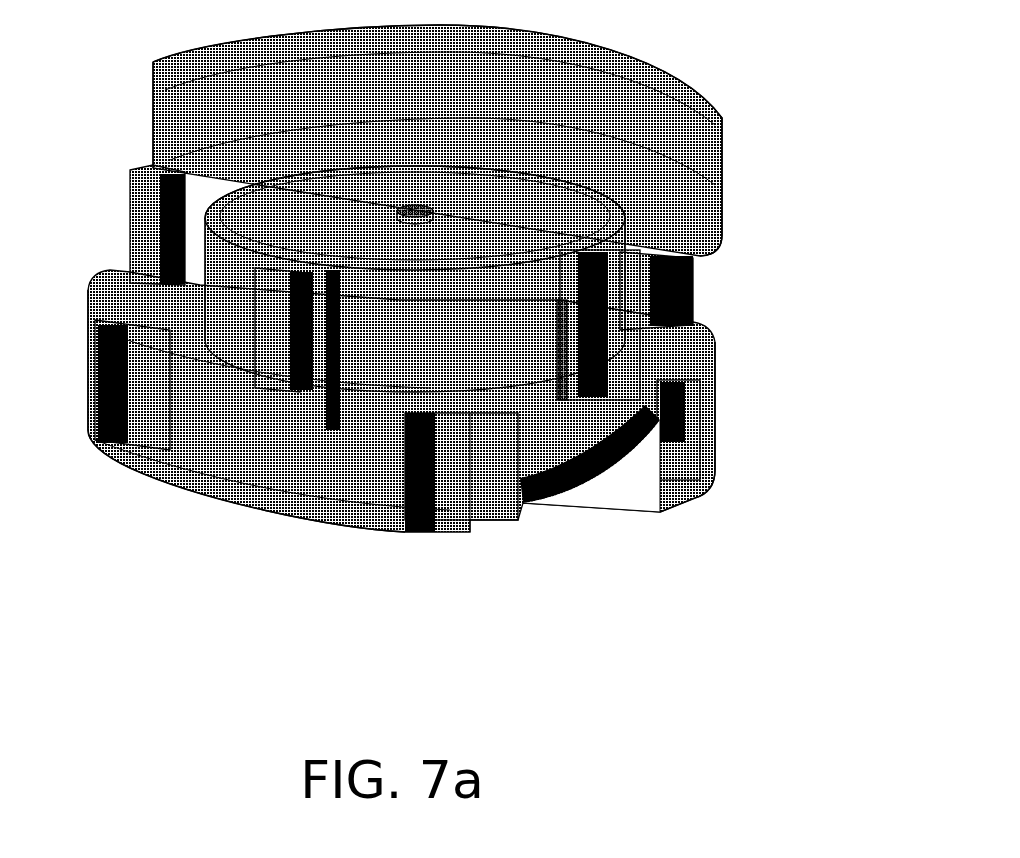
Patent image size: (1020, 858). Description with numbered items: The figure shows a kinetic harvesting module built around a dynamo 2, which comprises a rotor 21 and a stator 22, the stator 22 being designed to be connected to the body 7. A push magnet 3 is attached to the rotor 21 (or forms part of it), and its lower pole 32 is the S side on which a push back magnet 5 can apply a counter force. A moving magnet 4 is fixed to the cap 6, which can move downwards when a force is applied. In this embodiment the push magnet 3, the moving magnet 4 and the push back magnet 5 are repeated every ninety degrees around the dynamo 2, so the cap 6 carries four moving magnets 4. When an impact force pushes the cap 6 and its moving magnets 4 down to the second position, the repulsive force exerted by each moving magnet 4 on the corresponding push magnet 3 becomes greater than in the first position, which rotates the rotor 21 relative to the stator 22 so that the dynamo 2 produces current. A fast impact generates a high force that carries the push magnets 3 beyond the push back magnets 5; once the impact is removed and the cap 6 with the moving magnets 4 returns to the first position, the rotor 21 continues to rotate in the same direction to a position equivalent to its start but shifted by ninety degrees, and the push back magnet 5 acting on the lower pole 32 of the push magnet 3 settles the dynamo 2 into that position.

The dynamo 2 is at (455, 205).
The rotor 21 is at (410, 305).
The stator 22 is at (305, 210).
The push magnet 3 is at (342, 342).
The lower pole 32 is at (557, 385).
The moving magnet 4 is at (128, 259).
The push back magnet 5 is at (118, 412).
The cap 6 is at (643, 95).
The body 7 is at (398, 512).